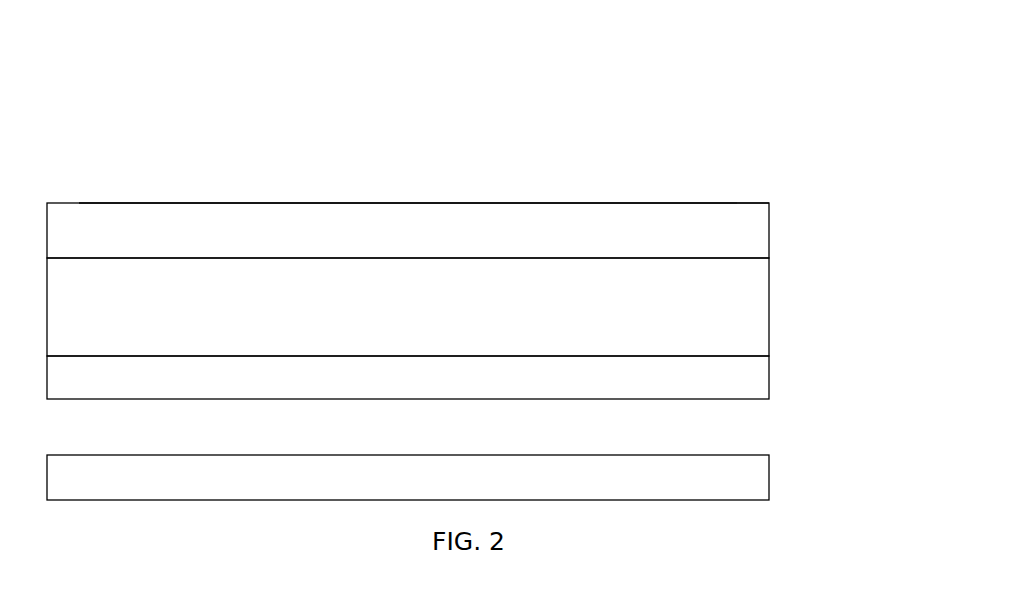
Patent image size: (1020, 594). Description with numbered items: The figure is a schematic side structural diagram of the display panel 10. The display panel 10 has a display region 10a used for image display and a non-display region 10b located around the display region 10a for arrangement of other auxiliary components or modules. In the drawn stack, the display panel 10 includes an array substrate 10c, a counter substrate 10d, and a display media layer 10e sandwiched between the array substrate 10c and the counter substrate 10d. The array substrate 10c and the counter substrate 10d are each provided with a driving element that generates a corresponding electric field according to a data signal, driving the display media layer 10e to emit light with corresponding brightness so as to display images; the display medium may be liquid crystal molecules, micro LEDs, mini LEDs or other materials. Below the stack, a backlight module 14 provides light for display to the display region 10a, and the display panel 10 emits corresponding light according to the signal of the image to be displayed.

The display panel 10 is at (422, 33).
The display region 10a is at (737, 203).
The non-display region 10b is at (765, 188).
The array substrate 10c is at (769, 375).
The counter substrate 10d is at (769, 242).
The display media layer 10e is at (769, 305).
The backlight module 14 is at (769, 482).